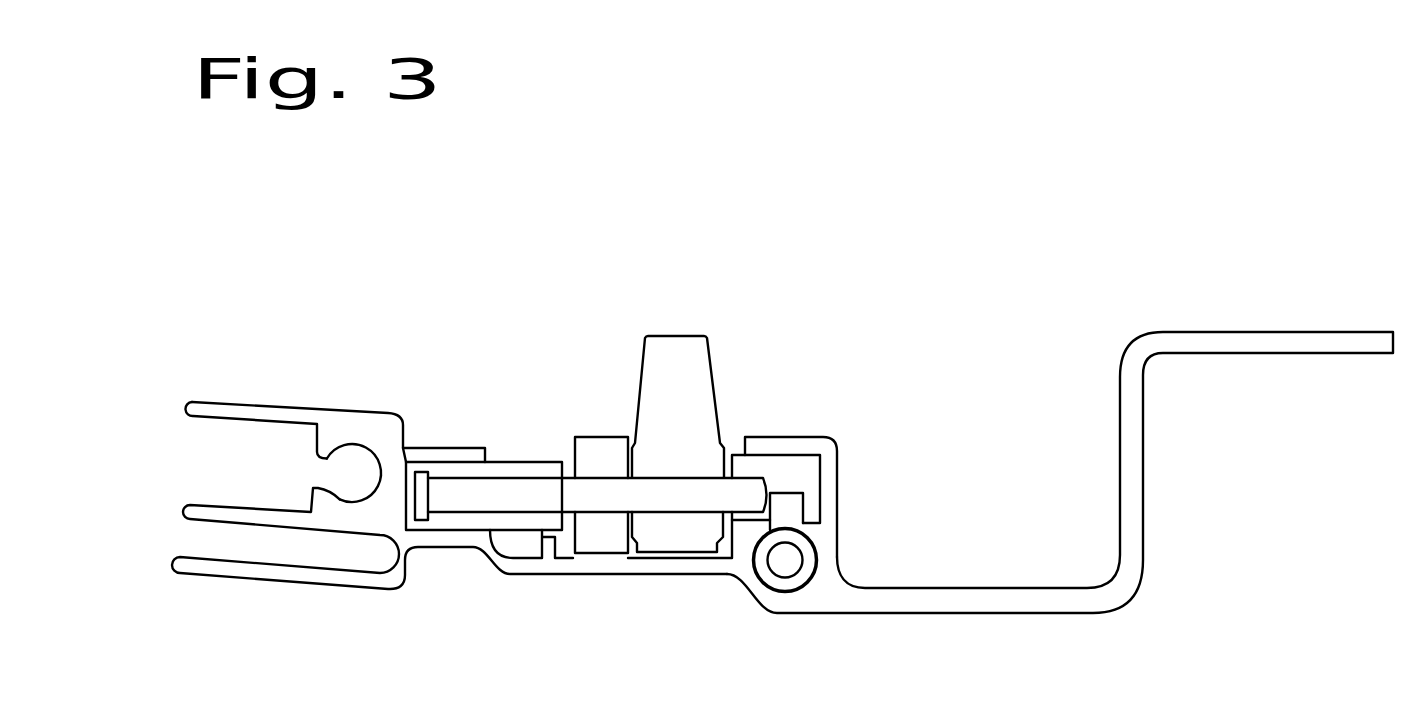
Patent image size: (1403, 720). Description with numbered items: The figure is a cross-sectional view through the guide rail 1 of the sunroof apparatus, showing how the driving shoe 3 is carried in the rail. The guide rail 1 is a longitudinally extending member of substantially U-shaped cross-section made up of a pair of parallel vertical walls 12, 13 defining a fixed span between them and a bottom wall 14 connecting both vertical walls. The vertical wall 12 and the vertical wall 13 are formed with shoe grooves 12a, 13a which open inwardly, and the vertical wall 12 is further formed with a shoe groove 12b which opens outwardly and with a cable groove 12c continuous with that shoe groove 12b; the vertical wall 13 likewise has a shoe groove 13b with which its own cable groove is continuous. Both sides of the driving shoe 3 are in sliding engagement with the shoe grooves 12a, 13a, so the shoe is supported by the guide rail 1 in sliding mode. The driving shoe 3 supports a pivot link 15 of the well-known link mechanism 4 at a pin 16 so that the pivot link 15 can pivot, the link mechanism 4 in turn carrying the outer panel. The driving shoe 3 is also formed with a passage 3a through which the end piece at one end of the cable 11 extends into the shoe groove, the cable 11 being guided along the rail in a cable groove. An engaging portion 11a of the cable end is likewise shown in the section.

The guide rail 1 is at (193, 395).
The driving shoe 3 is at (525, 459).
The passage 3a is at (837, 478).
The link mechanism 4 is at (723, 346).
The cable 11 is at (787, 560).
The engaging portion 11a is at (808, 553).
The vertical wall 12 is at (348, 432).
The shoe groove 12a is at (455, 468).
The shoe groove 12b is at (262, 430).
The cable groove 12c is at (340, 495).
The vertical wall 13 is at (838, 482).
The shoe groove 13a is at (790, 458).
The shoe groove 13b is at (815, 553).
The bottom wall 14 is at (588, 565).
The pivot link 15 is at (668, 363).
The pin 16 is at (675, 498).